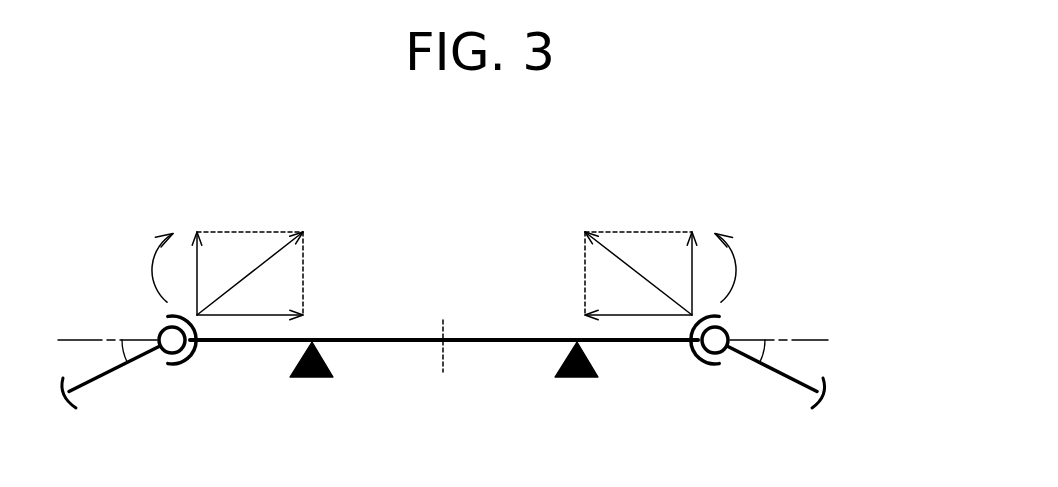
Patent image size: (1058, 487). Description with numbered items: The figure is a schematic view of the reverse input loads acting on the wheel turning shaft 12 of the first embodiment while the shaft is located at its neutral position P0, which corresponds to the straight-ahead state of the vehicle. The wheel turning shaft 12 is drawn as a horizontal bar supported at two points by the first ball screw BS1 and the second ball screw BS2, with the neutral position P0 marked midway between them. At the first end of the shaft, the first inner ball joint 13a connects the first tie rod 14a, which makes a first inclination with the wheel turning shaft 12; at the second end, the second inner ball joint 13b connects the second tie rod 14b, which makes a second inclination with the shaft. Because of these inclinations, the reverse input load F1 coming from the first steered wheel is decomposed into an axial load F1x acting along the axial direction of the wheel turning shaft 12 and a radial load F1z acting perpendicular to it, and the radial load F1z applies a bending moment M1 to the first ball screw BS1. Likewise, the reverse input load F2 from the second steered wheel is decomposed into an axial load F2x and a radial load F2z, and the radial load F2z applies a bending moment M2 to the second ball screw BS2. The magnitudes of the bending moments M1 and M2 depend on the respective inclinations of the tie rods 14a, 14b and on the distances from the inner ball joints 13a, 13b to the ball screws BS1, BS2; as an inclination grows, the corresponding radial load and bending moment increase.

The wheel turning shaft 12 is at (497, 342).
The first inner ball joint 13a is at (178, 365).
The second inner ball joint 13b is at (705, 365).
The first tie rod 14a is at (100, 378).
The second tie rod 14b is at (787, 378).
The first ball screw BS1 is at (310, 378).
The second ball screw BS2 is at (575, 380).
The neutral position P0 is at (445, 366).
The reverse input load F1 is at (268, 251).
The axial load F1x is at (282, 320).
The radial load F1z is at (194, 251).
The reverse input load F2 is at (617, 251).
The axial load F2x is at (609, 320).
The radial load F2z is at (690, 251).
The bending moment M1 is at (150, 268).
The bending moment M2 is at (738, 275).